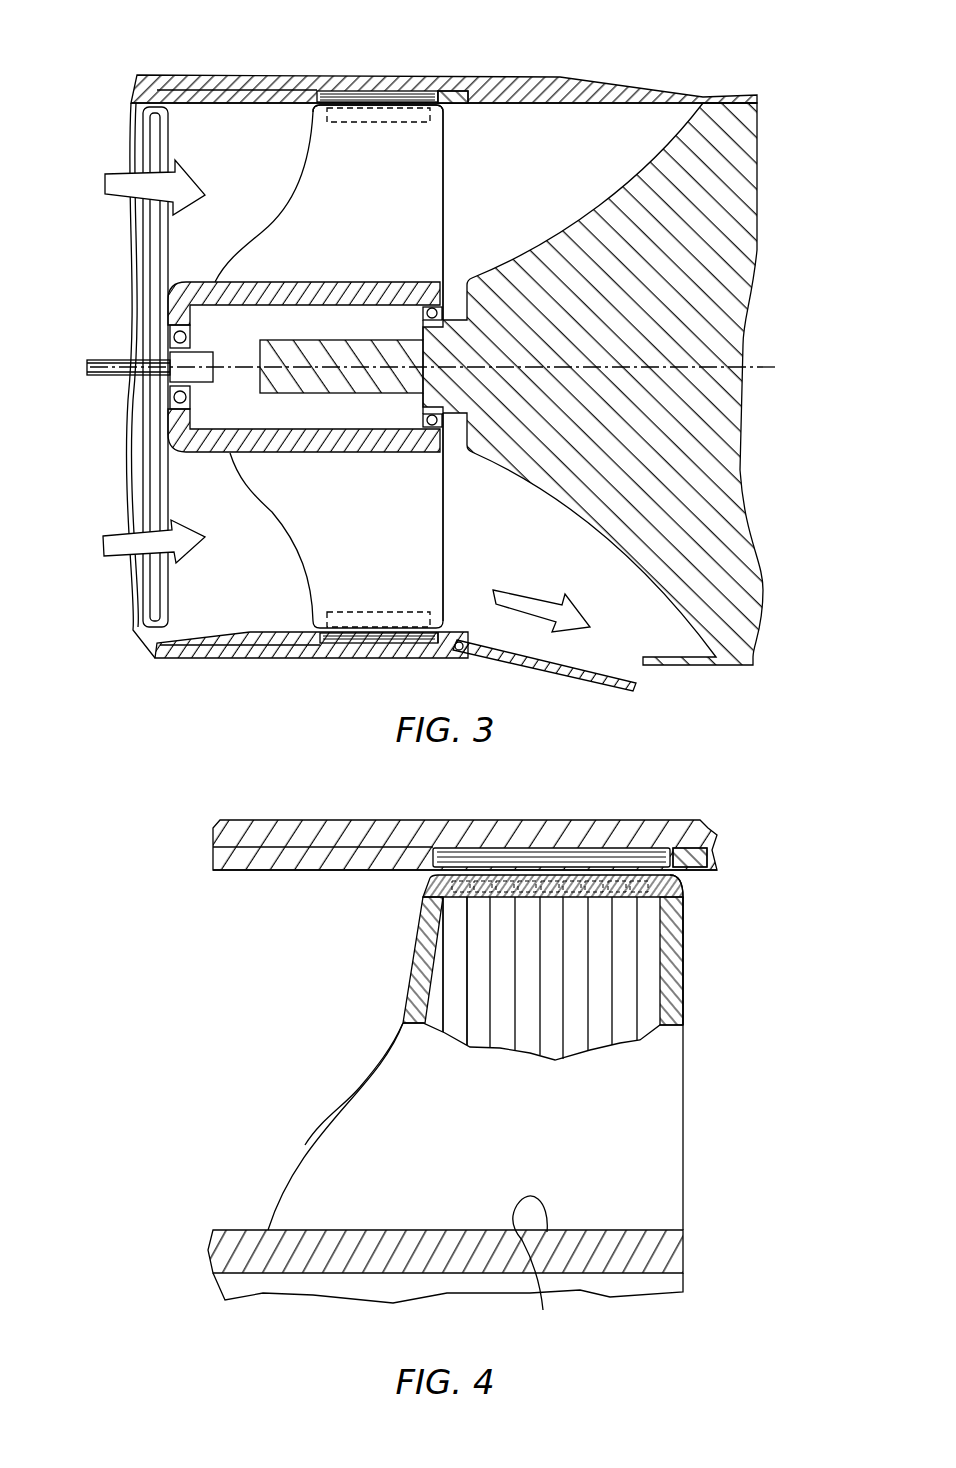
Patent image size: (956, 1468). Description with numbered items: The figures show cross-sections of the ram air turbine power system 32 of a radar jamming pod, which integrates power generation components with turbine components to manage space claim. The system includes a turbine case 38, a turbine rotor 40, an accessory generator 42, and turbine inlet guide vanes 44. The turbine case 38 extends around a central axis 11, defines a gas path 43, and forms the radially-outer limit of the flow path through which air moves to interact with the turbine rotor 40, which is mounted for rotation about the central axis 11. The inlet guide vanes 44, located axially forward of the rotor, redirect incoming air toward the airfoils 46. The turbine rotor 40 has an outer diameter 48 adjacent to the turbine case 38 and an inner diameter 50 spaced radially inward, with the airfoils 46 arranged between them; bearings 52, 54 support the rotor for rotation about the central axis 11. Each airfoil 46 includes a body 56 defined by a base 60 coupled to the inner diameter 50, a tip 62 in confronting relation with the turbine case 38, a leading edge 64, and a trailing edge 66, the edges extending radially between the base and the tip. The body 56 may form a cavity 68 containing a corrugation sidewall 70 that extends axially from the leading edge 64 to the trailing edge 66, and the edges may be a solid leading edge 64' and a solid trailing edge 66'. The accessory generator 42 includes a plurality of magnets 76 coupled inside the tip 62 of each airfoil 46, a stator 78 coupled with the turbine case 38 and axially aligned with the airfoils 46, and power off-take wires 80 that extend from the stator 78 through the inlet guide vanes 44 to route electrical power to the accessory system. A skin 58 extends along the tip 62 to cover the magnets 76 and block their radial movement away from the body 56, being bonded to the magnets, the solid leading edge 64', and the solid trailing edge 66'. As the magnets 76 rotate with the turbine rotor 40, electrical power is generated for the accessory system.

In FIG. 3, the central axis 11 is at (765, 365).
In FIG. 3, the ram air turbine power system 32 is at (212, 48).
In FIG. 4, the ram air turbine power system 32 is at (108, 848).
In FIG. 3, the turbine case 38 is at (512, 57).
In FIG. 4, the turbine case 38 is at (268, 806).
In FIG. 3, the turbine rotor 40 is at (469, 185).
In FIG. 3, the accessory generator 42 is at (464, 114).
In FIG. 3, the gas path 43 is at (122, 166).
In FIG. 3, the turbine inlet guide vanes 44 is at (121, 109).
In FIG. 3, the airfoils 46 is at (425, 222).
In FIG. 4, the airfoils 46 is at (342, 1028).
In FIG. 3, the outer diameter 48 is at (272, 104).
In FIG. 4, the outer diameter 48 is at (250, 871).
In FIG. 3, the inner diameter 50 is at (230, 284).
In FIG. 4, the inner diameter 50 is at (235, 1230).
In FIG. 3, the bearing 52 is at (206, 334).
In FIG. 3, the bearing 54 is at (409, 316).
In FIG. 4, the body 56 is at (339, 1055).
In FIG. 4, the skin 58 is at (430, 878).
In FIG. 4, the base 60 is at (533, 1265).
In FIG. 4, the tip 62 is at (712, 900).
In FIG. 4, the leading edge 64 is at (325, 1126).
In FIG. 4, the solid leading edge 64' is at (388, 960).
In FIG. 4, the trailing edge 66 is at (723, 1063).
In FIG. 4, the solid trailing edge 66' is at (713, 965).
In FIG. 4, the cavity 68 is at (445, 946).
In FIG. 4, the corrugation sidewall 70 is at (650, 947).
In FIG. 3, the plurality of magnets 76 is at (355, 124).
In FIG. 4, the plurality of magnets 76 is at (685, 875).
In FIG. 3, the stator 78 is at (454, 95).
In FIG. 4, the stator 78 is at (691, 855).
In FIG. 3, the power off-take wires 80 is at (166, 73).
In FIG. 4, the power off-take wires 80 is at (318, 836).